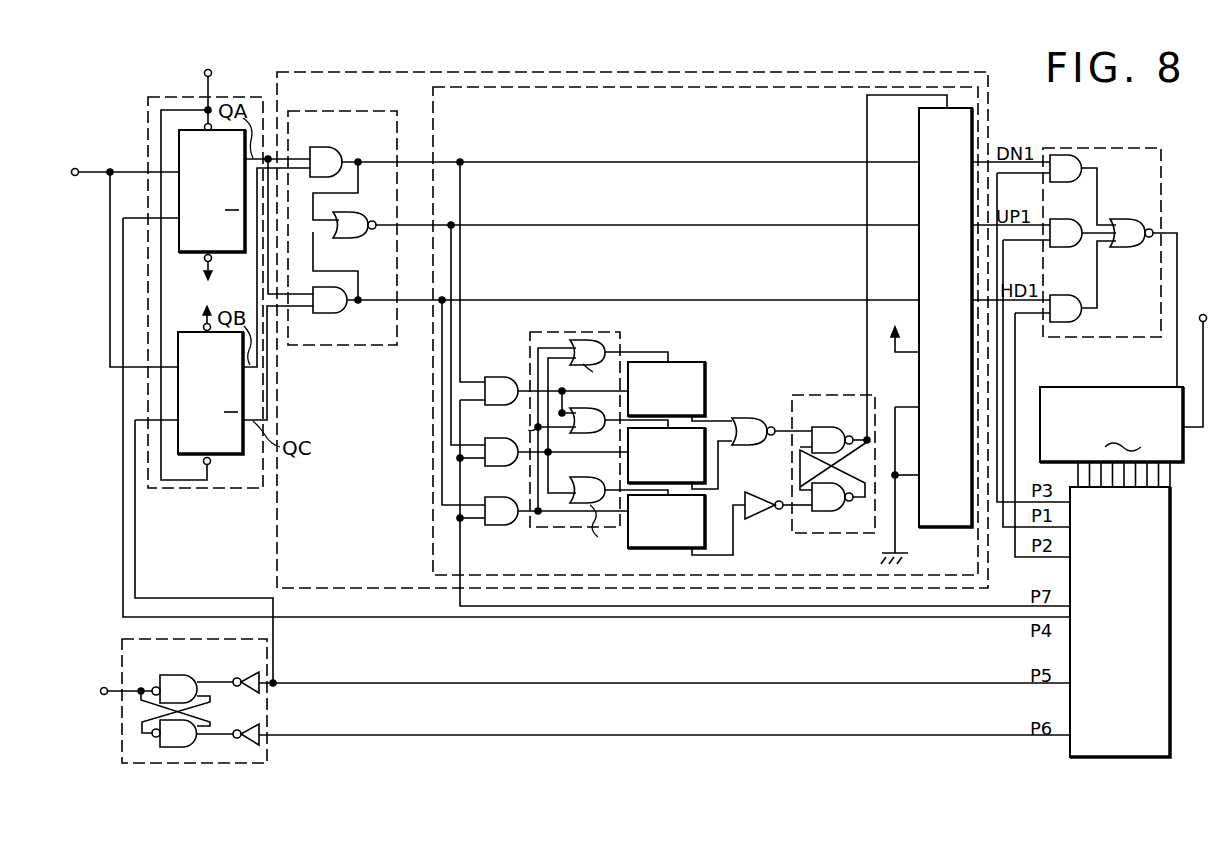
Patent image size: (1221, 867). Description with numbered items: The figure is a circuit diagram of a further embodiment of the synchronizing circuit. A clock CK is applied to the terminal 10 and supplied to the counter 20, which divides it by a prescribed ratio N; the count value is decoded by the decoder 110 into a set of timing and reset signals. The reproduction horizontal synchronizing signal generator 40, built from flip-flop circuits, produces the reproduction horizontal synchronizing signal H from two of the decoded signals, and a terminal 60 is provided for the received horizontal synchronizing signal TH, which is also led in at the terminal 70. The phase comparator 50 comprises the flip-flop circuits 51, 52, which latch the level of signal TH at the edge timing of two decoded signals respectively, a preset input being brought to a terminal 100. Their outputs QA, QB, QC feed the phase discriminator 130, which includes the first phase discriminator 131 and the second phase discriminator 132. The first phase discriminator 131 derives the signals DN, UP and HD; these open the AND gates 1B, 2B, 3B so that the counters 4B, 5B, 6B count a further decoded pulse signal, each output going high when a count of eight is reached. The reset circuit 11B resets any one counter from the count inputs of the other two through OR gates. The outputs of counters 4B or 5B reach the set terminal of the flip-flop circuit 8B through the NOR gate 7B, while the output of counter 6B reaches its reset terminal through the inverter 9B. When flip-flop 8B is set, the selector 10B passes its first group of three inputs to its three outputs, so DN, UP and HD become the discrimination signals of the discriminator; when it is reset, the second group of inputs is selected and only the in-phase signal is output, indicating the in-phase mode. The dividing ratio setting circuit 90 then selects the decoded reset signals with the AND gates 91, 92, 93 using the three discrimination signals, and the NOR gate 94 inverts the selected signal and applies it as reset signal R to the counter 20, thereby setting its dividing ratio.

The phase comparator 50 is at (148, 100).
The flip-flop circuit 51 is at (178, 138).
The flip-flop circuit 52 is at (180, 454).
The TH input terminal 70 is at (75, 168).
The G input terminal 100 is at (214, 73).
The second phase discriminator 132 is at (514, 82).
The first phase discriminator 131 is at (354, 112).
The phase discriminator 130 is at (643, 86).
The AND gate 1B is at (493, 377).
The AND gate 2B is at (486, 438).
The AND gate 3B is at (486, 500).
The reset circuit 11B is at (592, 356).
The counter 4B is at (695, 362).
The counter 5B is at (705, 464).
The counter 6B is at (705, 544).
The NOR gate 7B is at (736, 417).
The flip-flop circuit 8B is at (800, 395).
The inverter 9B is at (752, 494).
The selector 10B is at (975, 109).
The dividing ratio setting circuit 90 is at (1132, 148).
The AND gate 91 is at (1082, 165).
The AND gate 92 is at (1060, 219).
The AND gate 93 is at (1059, 295).
The NOR gate 94 is at (1127, 219).
The terminal 10 is at (1201, 321).
The counter 20 is at (1071, 387).
The decoder 110 is at (1171, 524).
The reproduction horizontal synchronizing signal generator 40 is at (120, 667).
The terminal 60 is at (98, 697).